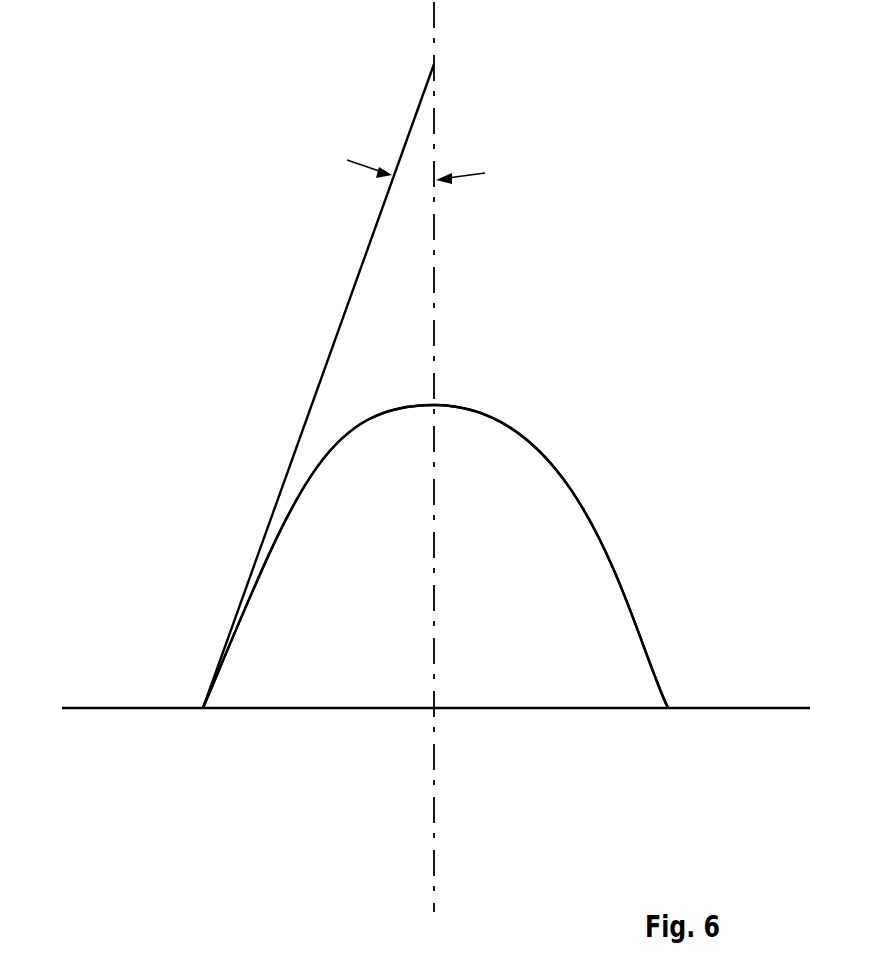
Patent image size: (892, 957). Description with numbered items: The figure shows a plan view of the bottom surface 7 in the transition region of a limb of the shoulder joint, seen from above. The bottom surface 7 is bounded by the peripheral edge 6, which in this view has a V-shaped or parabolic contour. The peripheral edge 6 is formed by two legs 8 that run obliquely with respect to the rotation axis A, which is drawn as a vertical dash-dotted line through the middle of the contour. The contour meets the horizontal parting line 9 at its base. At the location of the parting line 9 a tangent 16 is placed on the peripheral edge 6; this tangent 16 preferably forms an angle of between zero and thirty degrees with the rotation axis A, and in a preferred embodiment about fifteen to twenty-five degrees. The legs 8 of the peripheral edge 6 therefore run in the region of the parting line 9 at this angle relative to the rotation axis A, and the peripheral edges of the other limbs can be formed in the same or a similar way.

The peripheral edge 6 is at (553, 465).
The bottom surface 7 is at (552, 630).
The legs 8 is at (270, 543).
The parting line 9 is at (530, 708).
The tangent 16 is at (342, 315).
The rotation axis A is at (435, 270).